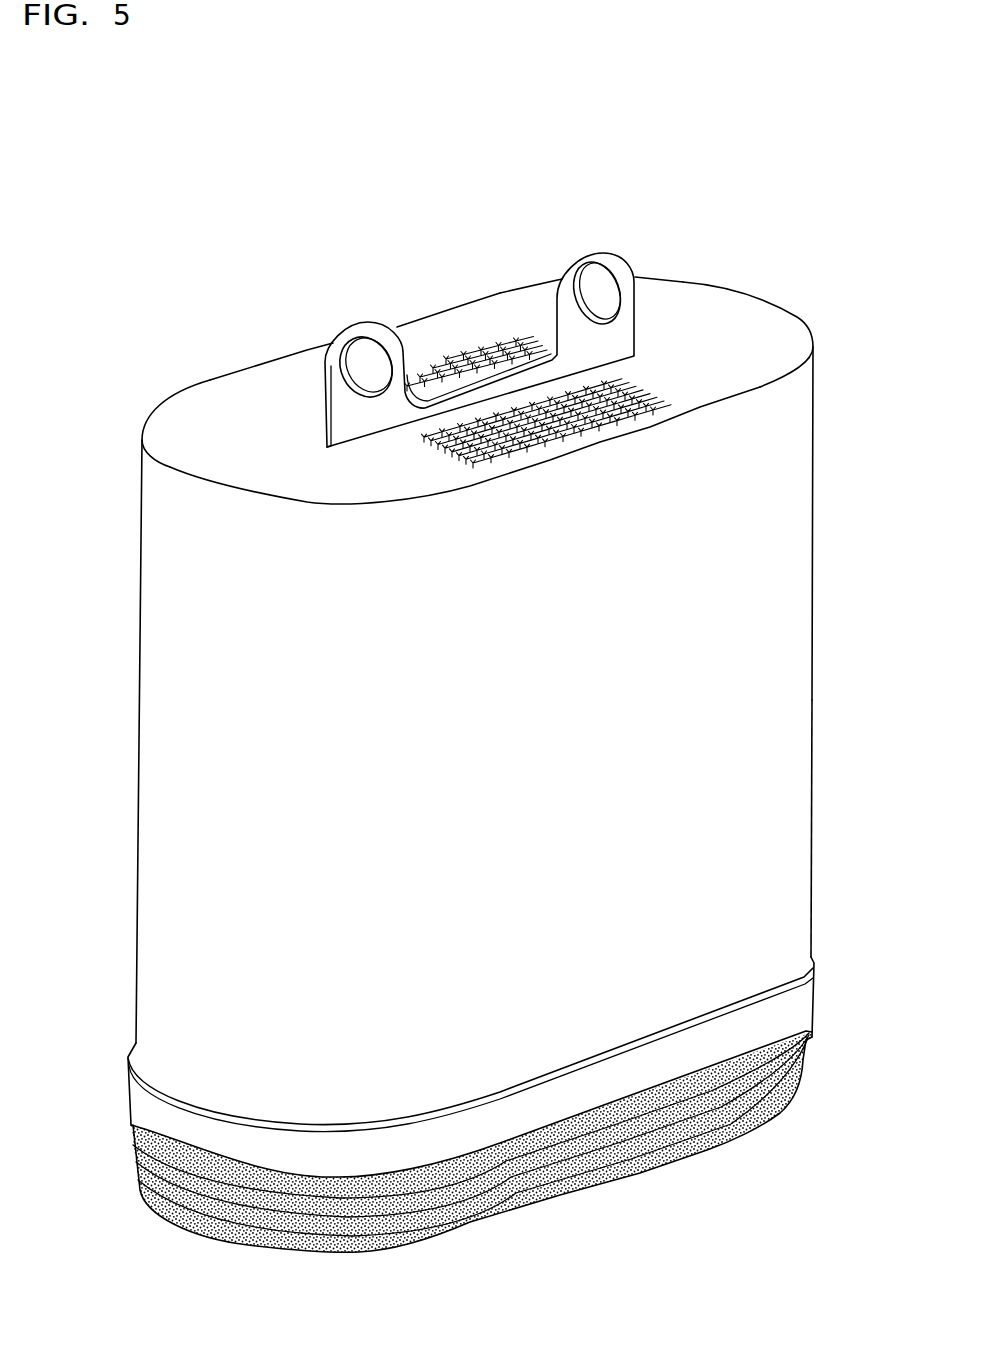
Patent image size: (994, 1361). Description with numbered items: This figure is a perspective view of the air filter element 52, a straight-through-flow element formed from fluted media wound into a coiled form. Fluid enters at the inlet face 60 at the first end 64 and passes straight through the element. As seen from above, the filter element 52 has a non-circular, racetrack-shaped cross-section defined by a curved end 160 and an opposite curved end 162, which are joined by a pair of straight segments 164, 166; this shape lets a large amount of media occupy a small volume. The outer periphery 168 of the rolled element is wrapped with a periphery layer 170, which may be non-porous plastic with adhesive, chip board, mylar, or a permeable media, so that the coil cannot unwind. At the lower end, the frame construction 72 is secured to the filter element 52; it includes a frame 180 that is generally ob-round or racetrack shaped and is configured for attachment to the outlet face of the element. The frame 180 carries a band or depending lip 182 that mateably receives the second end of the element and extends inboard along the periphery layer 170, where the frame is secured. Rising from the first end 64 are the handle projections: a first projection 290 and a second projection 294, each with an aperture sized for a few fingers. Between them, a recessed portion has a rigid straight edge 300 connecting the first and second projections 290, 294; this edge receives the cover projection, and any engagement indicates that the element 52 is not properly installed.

The filter element 52 is at (207, 253).
The inlet face 60 is at (307, 352).
The first end 64 is at (685, 278).
The frame construction 72 is at (133, 1100).
The curved end 160 is at (802, 323).
The curved end 162 is at (168, 472).
The straight segment 164 is at (463, 302).
The straight segment 166 is at (492, 473).
The outer periphery 168 is at (812, 682).
The periphery layer 170 is at (812, 792).
The frame 180 is at (812, 1007).
The depending lip 182 is at (242, 1140).
The first projection 290 is at (365, 323).
The second projection 294 is at (592, 255).
The straight edge 300 is at (455, 397).